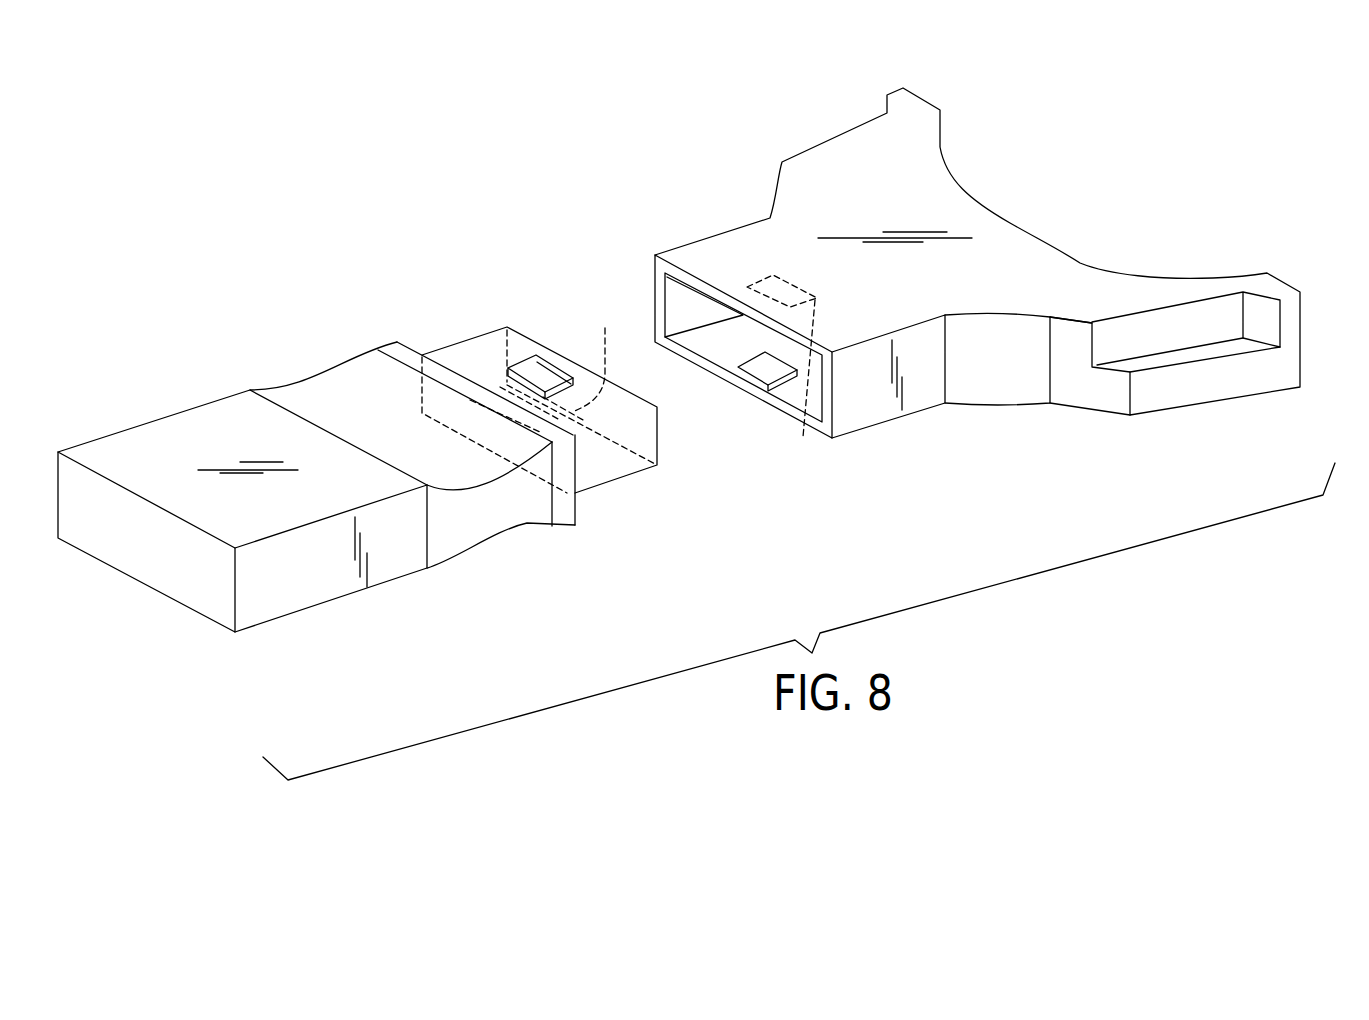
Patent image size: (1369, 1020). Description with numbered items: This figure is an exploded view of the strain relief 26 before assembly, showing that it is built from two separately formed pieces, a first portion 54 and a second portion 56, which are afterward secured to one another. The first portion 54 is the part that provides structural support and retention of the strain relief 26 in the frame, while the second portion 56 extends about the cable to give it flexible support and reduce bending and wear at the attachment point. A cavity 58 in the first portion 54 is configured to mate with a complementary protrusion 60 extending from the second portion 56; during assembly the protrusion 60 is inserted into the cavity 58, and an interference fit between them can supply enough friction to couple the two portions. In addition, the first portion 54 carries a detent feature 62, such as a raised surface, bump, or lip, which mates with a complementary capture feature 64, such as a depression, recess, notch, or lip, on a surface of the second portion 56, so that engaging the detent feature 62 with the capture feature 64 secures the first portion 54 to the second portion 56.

The strain relief 26 is at (300, 290).
The first portion 54 is at (1002, 406).
The second portion 56 is at (305, 608).
The cavity 58 is at (688, 299).
The protrusion 60 is at (618, 484).
The detent feature 62 is at (778, 383).
The capture feature 64 is at (553, 370).